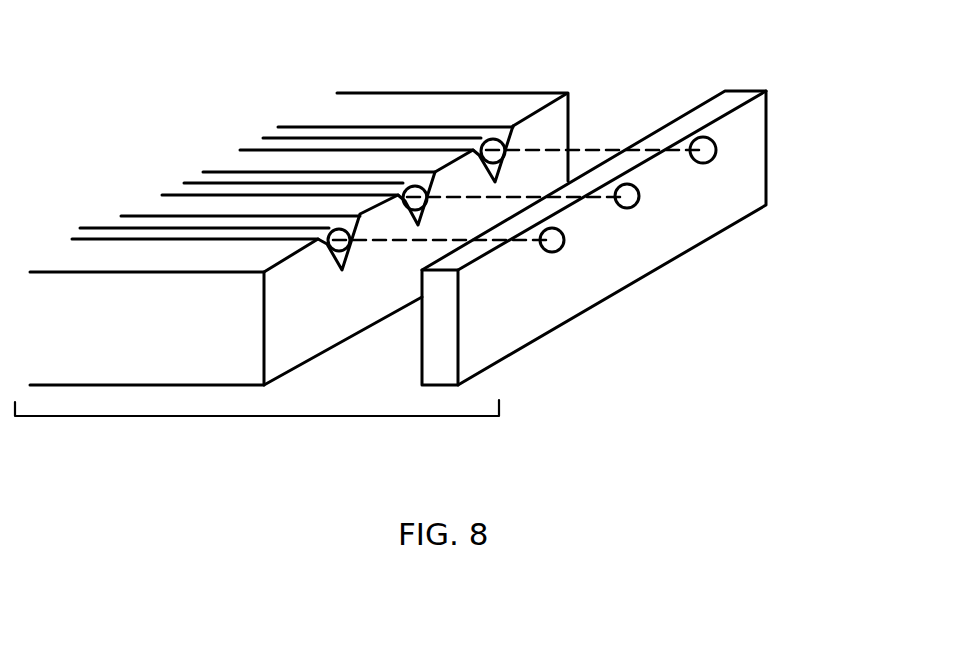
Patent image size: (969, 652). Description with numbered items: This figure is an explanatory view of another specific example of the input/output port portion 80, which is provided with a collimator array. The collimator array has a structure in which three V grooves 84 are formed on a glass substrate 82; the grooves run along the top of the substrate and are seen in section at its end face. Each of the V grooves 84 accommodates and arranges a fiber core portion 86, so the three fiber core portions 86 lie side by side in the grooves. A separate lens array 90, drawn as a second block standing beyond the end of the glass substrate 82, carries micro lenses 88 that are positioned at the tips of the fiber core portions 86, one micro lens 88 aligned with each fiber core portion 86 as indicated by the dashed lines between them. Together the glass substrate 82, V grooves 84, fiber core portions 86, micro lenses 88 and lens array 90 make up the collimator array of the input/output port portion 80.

The input/output port portion 80 is at (257, 431).
The glass substrate 82 is at (525, 103).
The V grooves 84 is at (420, 128).
The fiber core portion 86 is at (350, 137).
The micro lenses 88 is at (697, 139).
The lens array 90 is at (788, 137).